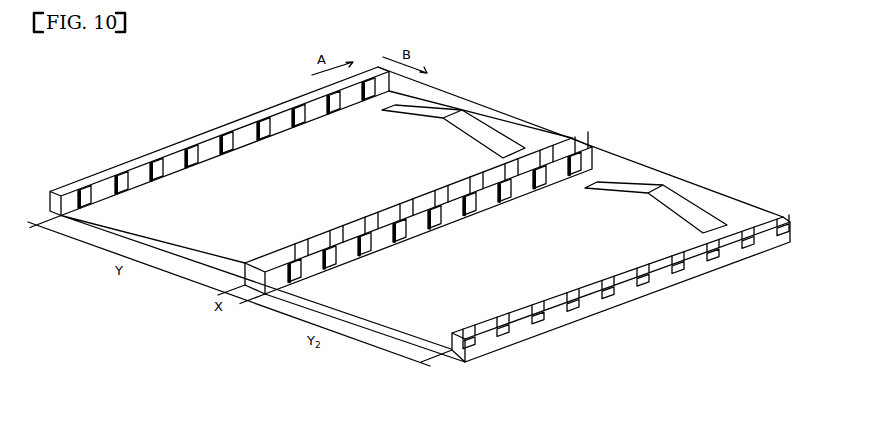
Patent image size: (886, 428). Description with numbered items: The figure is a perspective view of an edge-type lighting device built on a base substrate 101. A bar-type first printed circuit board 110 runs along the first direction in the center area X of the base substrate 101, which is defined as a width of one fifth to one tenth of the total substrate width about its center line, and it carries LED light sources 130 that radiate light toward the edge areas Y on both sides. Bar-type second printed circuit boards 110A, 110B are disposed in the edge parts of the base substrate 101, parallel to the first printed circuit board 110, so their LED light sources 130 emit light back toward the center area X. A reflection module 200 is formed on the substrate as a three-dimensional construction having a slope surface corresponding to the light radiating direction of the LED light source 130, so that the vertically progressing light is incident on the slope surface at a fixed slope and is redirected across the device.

The base substrate 101 is at (412, 330).
The first printed circuit board 110 is at (574, 140).
The second printed circuit board 110A is at (773, 220).
The second printed circuit board 110B is at (212, 133).
The LED light source 130 is at (598, 167).
The reflection module 200 is at (432, 112).